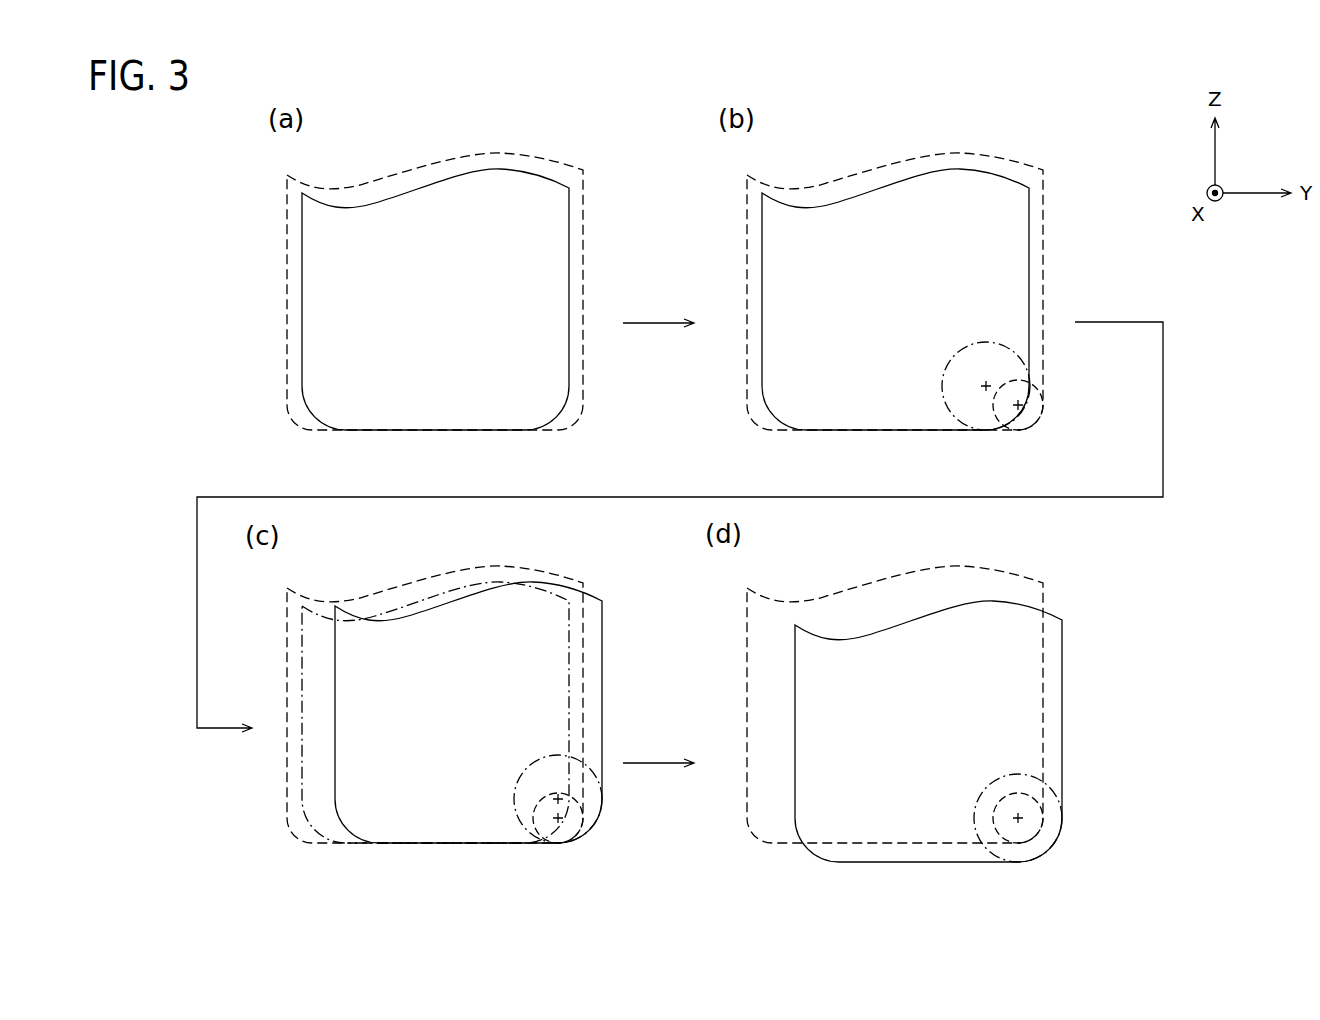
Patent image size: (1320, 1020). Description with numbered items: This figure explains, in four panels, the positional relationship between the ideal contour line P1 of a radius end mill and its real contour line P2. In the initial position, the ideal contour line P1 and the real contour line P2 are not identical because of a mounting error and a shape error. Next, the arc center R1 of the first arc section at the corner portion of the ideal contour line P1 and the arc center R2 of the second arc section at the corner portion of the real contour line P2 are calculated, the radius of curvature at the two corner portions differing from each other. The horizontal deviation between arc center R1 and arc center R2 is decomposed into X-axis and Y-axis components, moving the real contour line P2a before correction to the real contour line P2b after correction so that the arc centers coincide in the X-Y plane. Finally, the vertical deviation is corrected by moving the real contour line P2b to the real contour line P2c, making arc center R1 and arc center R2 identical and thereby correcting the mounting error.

The ideal contour line P1 is at (585, 215).
The real contour line P2 is at (570, 278).
The real contour line before correction P2a is at (1030, 278).
The real contour line after correction P2b is at (603, 733).
The real contour line after vertical correction P2c is at (1063, 753).
The arc center of ideal contour line R1 is at (1020, 404).
The arc center of real contour line R2 is at (985, 385).